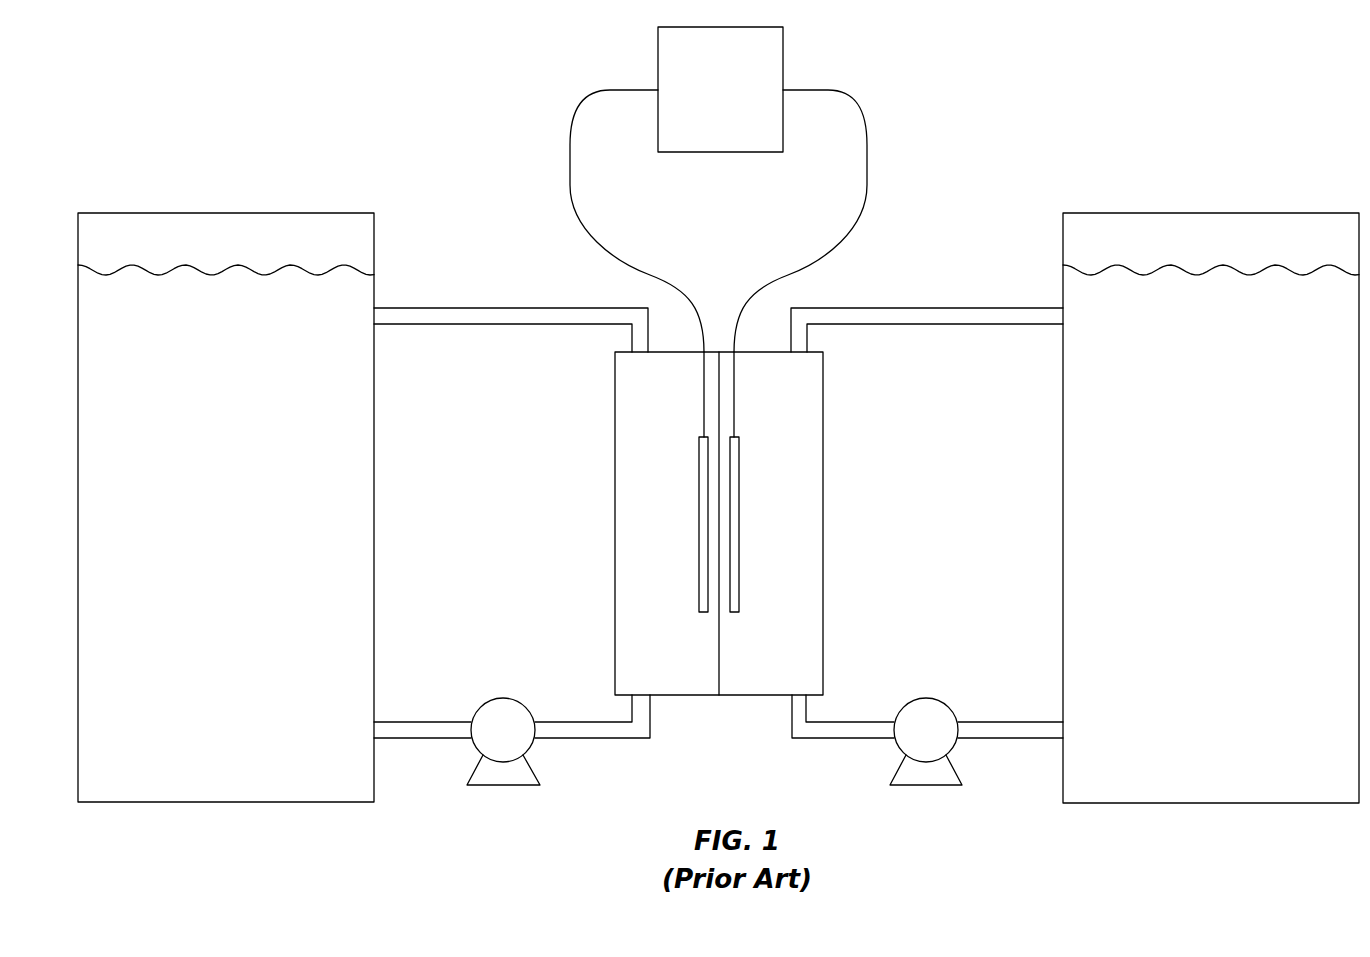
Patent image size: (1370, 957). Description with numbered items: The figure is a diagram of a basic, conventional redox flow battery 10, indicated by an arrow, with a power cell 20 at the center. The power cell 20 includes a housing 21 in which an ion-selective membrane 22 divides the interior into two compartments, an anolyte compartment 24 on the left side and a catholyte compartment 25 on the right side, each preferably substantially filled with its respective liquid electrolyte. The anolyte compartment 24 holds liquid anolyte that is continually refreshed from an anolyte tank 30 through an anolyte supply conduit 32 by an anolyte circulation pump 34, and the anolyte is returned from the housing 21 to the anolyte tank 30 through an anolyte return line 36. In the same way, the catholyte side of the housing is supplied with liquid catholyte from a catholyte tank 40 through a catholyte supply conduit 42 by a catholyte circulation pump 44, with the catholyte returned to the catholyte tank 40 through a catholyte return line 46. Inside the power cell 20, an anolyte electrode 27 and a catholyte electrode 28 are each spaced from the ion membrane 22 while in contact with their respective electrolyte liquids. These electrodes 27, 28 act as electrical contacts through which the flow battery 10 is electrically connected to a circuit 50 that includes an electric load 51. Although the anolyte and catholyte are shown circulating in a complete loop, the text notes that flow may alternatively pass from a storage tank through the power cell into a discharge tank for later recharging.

The redox flow battery 10 is at (298, 80).
The power cell 20 is at (759, 523).
The housing 21 is at (823, 570).
The ion-selective membrane 22 is at (720, 655).
The anolyte compartment 24 is at (648, 415).
The catholyte compartment 25 is at (748, 415).
The anolyte electrode 27 is at (697, 483).
The catholyte electrode 28 is at (741, 483).
The anolyte tank 30 is at (375, 508).
The anolyte supply conduit 32 is at (440, 720).
The anolyte circulation pump 34 is at (538, 778).
The anolyte return line 36 is at (506, 308).
The catholyte tank 40 is at (1063, 508).
The catholyte supply conduit 42 is at (995, 720).
The catholyte circulation pump 44 is at (893, 778).
The catholyte return line 46 is at (935, 308).
The circuit 50 is at (880, 164).
The electric load 51 is at (738, 103).